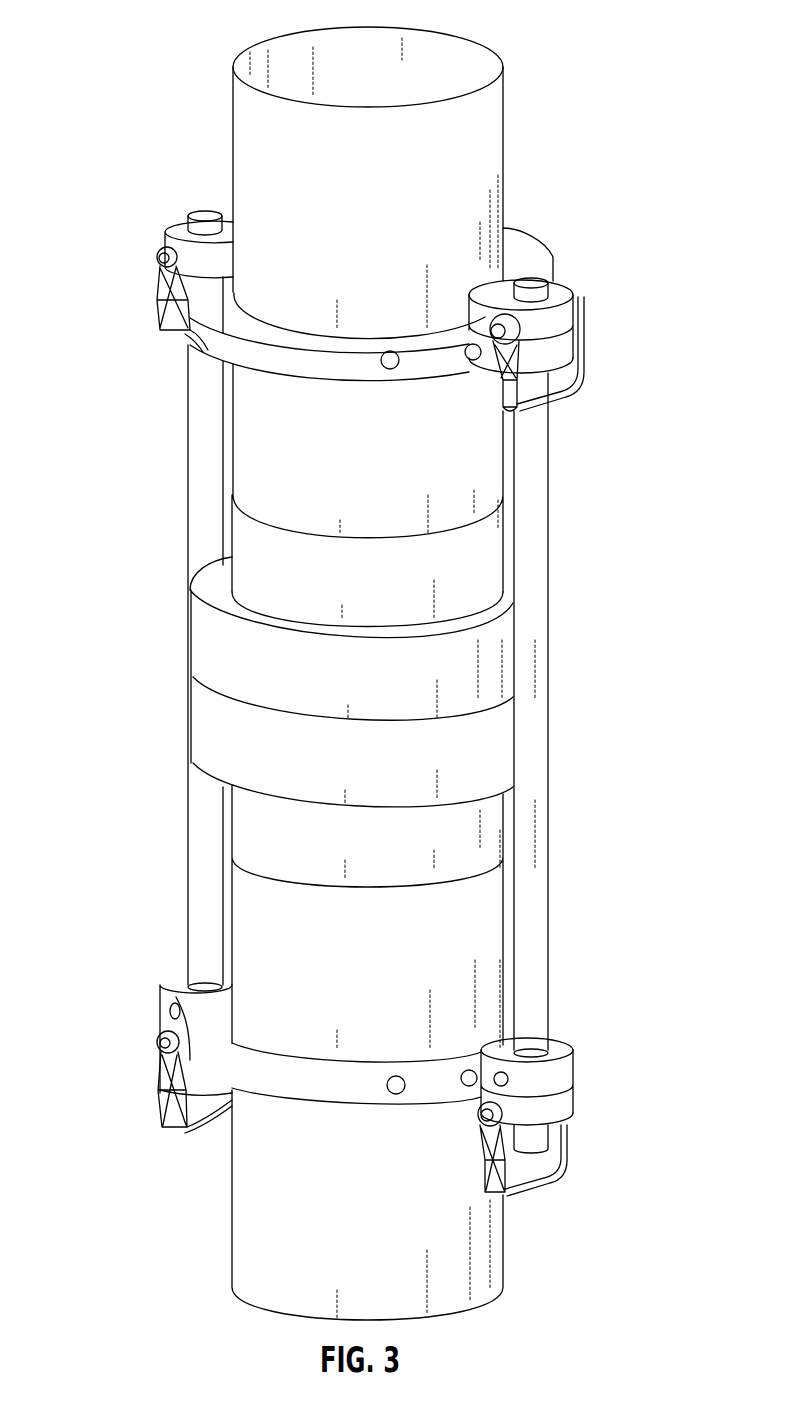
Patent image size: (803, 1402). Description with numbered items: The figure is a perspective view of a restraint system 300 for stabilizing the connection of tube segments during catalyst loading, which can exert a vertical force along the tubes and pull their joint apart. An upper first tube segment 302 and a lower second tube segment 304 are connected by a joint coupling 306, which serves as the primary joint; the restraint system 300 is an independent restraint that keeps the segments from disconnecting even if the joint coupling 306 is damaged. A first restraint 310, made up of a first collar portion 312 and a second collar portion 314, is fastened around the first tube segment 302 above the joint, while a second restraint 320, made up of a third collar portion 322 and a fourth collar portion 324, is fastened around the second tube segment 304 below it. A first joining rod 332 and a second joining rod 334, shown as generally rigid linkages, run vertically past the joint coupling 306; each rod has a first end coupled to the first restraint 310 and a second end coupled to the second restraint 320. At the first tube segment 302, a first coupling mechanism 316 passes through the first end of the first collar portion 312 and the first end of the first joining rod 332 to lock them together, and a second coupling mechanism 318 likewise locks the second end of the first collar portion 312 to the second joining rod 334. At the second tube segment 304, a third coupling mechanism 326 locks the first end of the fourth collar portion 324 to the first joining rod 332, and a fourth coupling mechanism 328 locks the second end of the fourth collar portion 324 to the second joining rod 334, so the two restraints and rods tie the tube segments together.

The restraint system 300 is at (141, 41).
The first tube segment 302 is at (256, 156).
The second tube segment 304 is at (247, 1249).
The joint coupling 306 is at (515, 702).
The first restraint 310 is at (651, 325).
The first collar portion 312 is at (562, 318).
The second collar portion 314 is at (557, 350).
The first coupling mechanism 316 is at (487, 328).
The second coupling mechanism 318 is at (162, 258).
The second restraint 320 is at (651, 1068).
The third collar portion 322 is at (563, 1067).
The fourth collar portion 324 is at (557, 1100).
The third coupling mechanism 326 is at (530, 1187).
The fourth coupling mechanism 328 is at (163, 1042).
The first joining rod 332 is at (535, 843).
The second joining rod 334 is at (200, 458).